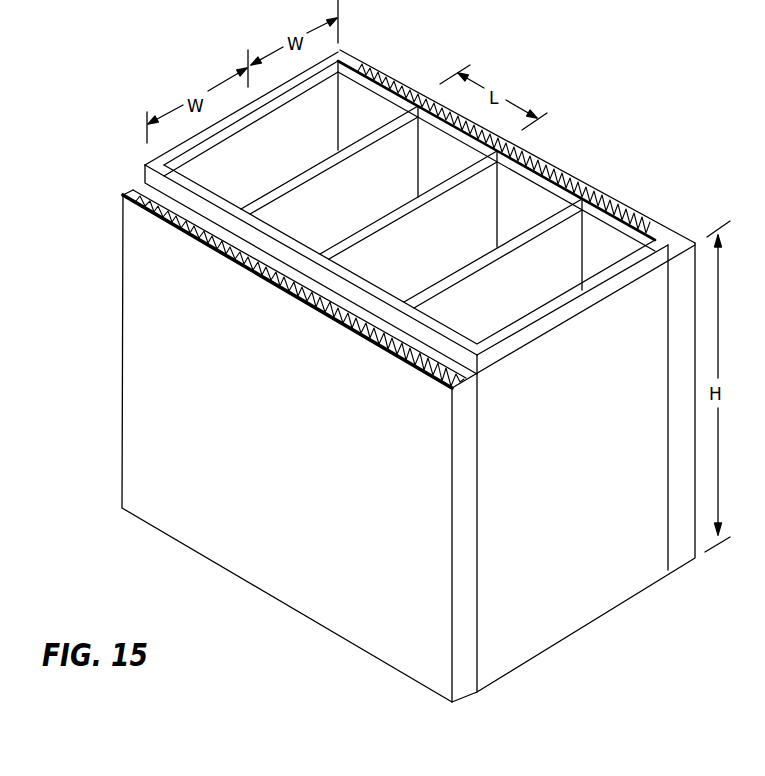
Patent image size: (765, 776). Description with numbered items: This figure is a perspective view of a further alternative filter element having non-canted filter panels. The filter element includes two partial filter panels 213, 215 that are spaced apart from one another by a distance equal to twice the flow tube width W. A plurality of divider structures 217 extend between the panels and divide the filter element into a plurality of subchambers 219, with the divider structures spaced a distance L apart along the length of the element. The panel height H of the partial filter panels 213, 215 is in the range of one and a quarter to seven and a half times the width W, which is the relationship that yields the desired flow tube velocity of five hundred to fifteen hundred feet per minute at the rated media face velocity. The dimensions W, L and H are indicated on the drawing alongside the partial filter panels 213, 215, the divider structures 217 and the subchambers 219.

The partial filter panel 213 is at (128, 312).
The partial filter panel 215 is at (592, 182).
The divider structure 217 is at (292, 182).
The subchamber 219 is at (291, 219).